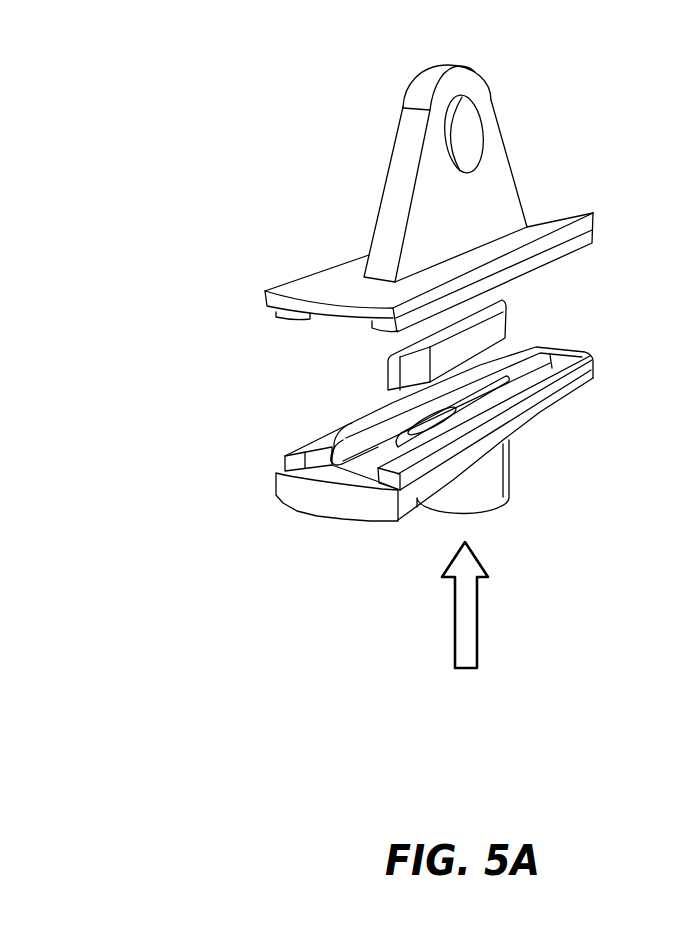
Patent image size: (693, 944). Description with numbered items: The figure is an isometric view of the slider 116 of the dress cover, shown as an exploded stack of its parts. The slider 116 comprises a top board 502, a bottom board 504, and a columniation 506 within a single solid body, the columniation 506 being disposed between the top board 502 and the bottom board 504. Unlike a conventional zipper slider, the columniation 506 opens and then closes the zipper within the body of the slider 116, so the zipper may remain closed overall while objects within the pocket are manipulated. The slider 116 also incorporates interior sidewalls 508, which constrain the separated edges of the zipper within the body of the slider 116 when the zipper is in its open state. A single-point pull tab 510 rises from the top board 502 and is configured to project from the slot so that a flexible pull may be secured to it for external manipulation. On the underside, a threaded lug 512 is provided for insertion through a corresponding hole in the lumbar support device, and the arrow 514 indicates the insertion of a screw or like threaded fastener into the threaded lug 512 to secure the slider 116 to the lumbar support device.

The slider 116 is at (197, 90).
The top board 502 is at (555, 222).
The bottom board 504 is at (572, 387).
The columniation 506 is at (457, 342).
The interior sidewalls 508 is at (361, 421).
The single-point pull tab 510 is at (463, 138).
The threaded lug 512 is at (485, 475).
The fastener insertion 514 is at (463, 617).